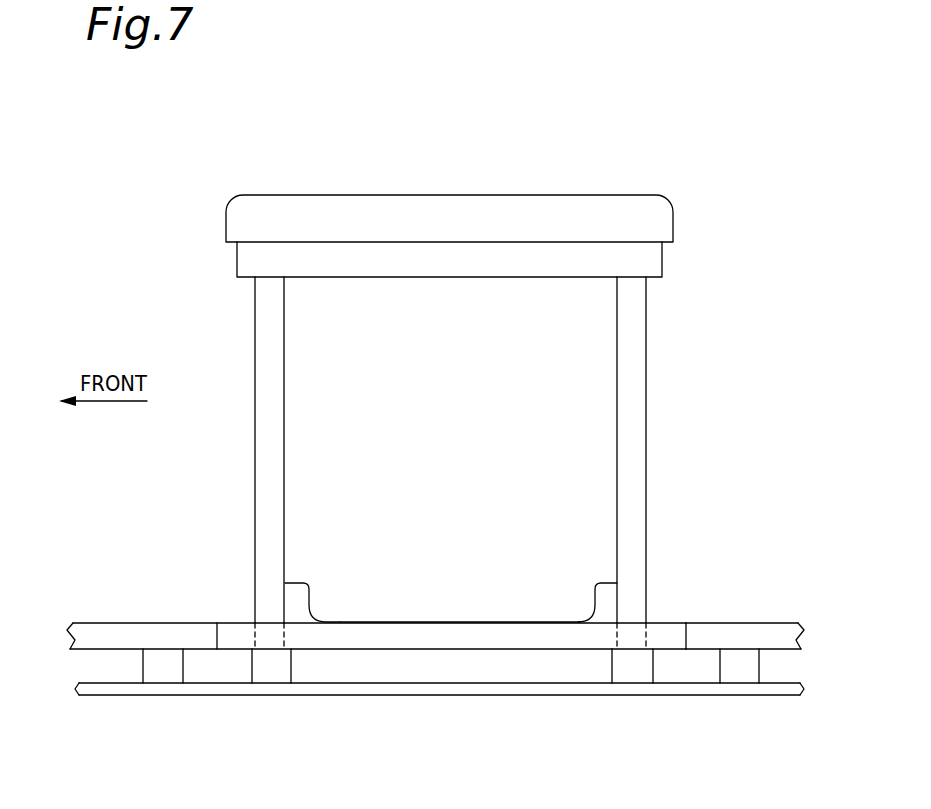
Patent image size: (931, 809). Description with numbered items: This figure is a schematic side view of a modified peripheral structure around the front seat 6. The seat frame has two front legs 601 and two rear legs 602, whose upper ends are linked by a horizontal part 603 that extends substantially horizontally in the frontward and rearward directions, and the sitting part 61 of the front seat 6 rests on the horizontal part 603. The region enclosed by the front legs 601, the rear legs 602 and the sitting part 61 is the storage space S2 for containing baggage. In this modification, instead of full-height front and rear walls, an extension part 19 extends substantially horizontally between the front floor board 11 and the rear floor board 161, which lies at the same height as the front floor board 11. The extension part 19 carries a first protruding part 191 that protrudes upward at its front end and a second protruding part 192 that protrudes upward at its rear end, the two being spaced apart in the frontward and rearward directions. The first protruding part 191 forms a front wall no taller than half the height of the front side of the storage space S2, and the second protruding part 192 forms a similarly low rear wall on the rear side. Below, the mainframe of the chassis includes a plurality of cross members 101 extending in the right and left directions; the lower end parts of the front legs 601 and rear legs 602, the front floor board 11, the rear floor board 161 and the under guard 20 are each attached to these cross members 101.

The front seat 6 is at (226, 187).
The sitting part 61 is at (481, 208).
The horizontal part 603 is at (537, 258).
The storage space S2 is at (400, 293).
The front legs 601 is at (272, 310).
The rear legs 602 is at (627, 320).
The extension part 19 is at (458, 634).
The first protruding part 191 is at (296, 590).
The second protruding part 192 is at (607, 590).
The front floor board 11 is at (128, 632).
The rear floor board 161 is at (772, 632).
The cross members 101 is at (163, 672).
The under guard 20 is at (105, 690).